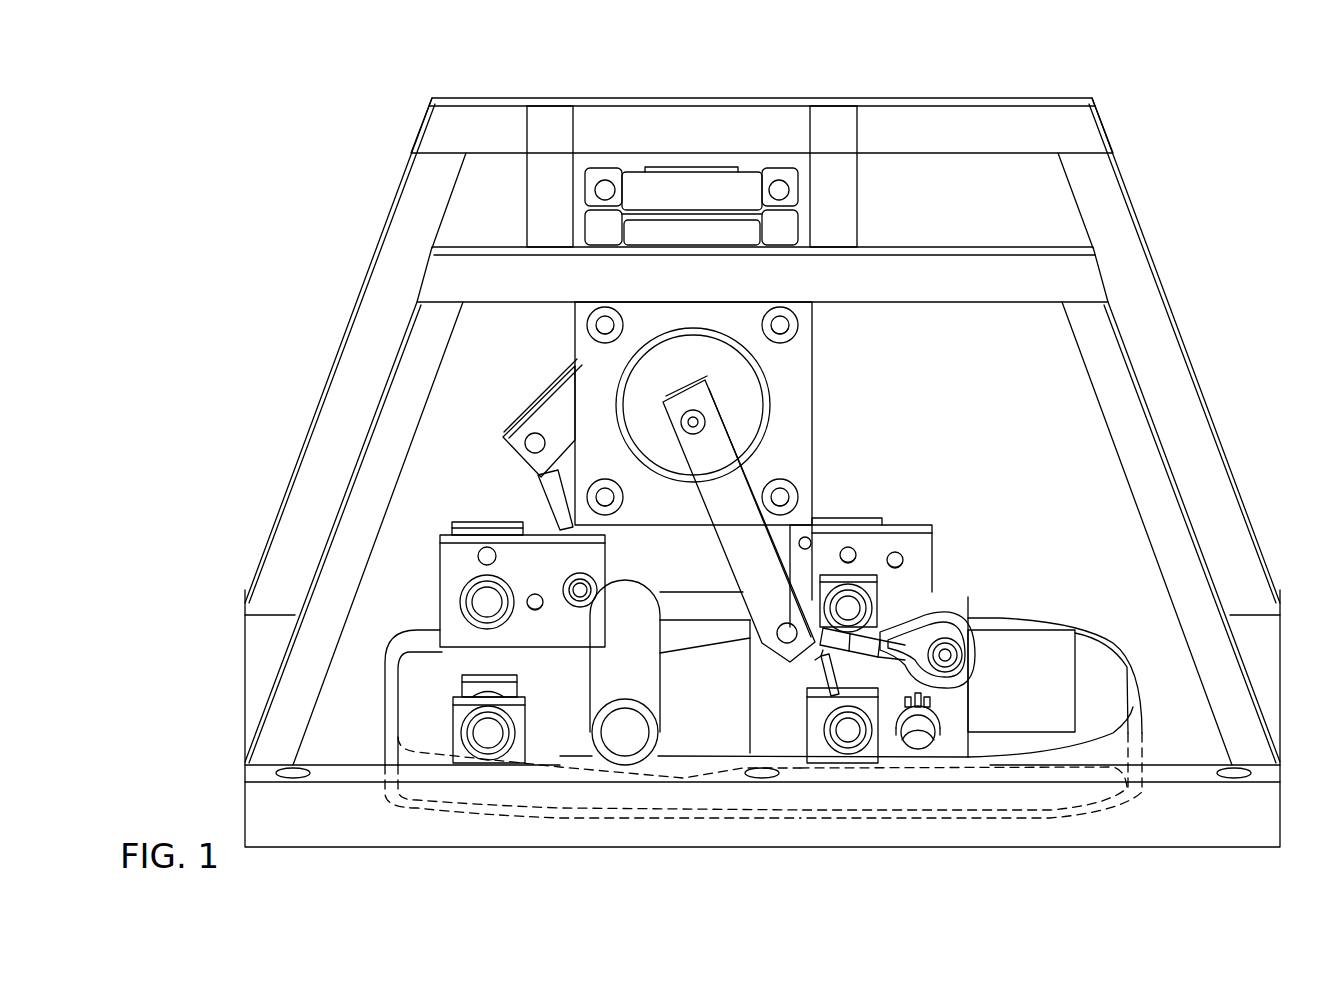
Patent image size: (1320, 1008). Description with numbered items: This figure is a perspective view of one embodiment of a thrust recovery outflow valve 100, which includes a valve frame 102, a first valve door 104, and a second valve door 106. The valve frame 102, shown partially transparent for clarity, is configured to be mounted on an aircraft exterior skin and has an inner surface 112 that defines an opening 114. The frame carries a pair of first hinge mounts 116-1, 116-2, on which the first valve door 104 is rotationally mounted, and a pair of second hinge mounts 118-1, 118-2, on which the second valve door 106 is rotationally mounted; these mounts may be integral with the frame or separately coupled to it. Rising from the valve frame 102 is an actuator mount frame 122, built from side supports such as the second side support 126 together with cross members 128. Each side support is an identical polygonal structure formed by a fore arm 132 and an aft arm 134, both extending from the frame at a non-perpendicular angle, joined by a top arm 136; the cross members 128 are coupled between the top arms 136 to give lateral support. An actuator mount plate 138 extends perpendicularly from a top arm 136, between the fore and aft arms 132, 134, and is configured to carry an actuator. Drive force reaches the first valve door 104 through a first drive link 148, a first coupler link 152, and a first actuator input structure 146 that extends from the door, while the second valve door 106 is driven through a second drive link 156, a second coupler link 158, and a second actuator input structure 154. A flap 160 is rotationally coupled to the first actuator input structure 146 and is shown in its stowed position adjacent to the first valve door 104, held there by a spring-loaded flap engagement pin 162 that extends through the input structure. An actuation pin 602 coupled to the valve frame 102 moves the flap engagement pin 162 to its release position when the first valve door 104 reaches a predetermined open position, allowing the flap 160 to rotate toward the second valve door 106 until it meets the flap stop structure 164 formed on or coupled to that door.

The thrust recovery outflow valve 100 is at (727, 445).
The valve frame 102 is at (720, 718).
The first valve door 104 is at (1126, 773).
The second valve door 106 is at (406, 766).
The inner surface 112 is at (410, 656).
The opening 114 is at (1098, 632).
The first hinge mount 116-1 is at (820, 750).
The first hinge mount 116-2 is at (844, 520).
The second hinge mount 118-1 is at (508, 718).
The second hinge mount 118-2 is at (478, 520).
The actuator mount frame 122 is at (769, 323).
The second side support 126 is at (717, 109).
The cross member 128 is at (548, 118).
The fore arm 132 is at (1110, 182).
The aft arm 134 is at (408, 204).
The top arm 136 is at (680, 102).
The actuator mount plate 138 is at (804, 391).
The first actuator input structure 146 is at (948, 604).
The first drive link 148 is at (714, 497).
The first coupler link 152 is at (872, 630).
The second actuator input structure 154 is at (581, 613).
The second drive link 156 is at (545, 398).
The second coupler link 158 is at (600, 556).
The flap 160 is at (1010, 740).
The flap engagement pin 162 is at (918, 750).
The flap stop structure 164 is at (648, 740).
The actuation pin 602 is at (826, 664).